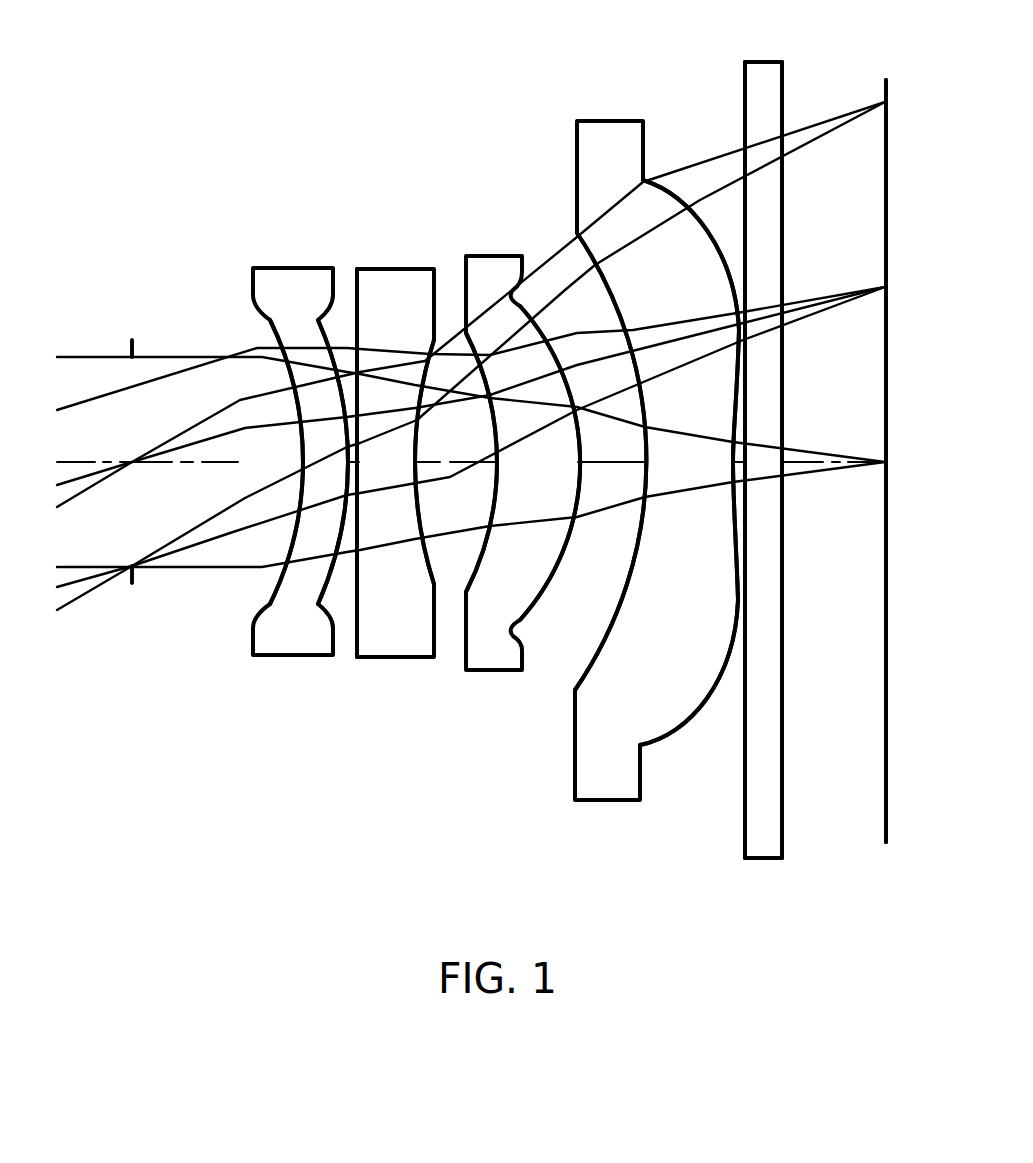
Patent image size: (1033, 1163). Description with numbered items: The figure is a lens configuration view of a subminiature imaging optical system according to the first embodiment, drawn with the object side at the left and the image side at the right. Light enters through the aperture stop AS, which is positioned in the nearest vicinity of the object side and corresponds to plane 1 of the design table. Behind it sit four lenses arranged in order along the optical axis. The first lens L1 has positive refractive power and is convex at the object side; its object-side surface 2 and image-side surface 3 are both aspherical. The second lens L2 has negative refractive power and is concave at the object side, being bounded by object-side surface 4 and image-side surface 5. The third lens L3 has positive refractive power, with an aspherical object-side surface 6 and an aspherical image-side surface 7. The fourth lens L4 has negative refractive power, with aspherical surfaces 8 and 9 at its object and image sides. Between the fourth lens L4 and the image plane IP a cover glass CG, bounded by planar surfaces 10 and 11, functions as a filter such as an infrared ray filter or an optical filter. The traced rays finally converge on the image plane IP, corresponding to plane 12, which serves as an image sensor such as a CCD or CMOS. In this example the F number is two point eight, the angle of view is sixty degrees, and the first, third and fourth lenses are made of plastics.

The aperture stop plane 1 is at (133, 340).
The object-side surface of first lens 2 is at (253, 282).
The image-side surface of first lens 3 is at (338, 268).
The object-side surface of second lens 4 is at (357, 268).
The image-side surface of second lens 5 is at (437, 268).
The object-side surface of third lens 6 is at (466, 257).
The image-side surface of third lens 7 is at (528, 255).
The object-side surface of fourth lens 8 is at (577, 140).
The image-side surface of fourth lens 9 is at (643, 150).
The object-side surface of cover glass 10 is at (745, 80).
The image-side surface of cover glass 11 is at (784, 78).
The image plane surface 12 is at (887, 92).
The aperture stop AS is at (131, 584).
The first lens L1 is at (291, 656).
The second lens L2 is at (397, 658).
The third lens L3 is at (490, 671).
The fourth lens L4 is at (603, 801).
The cover glass CG is at (745, 818).
The image plane IP is at (886, 800).